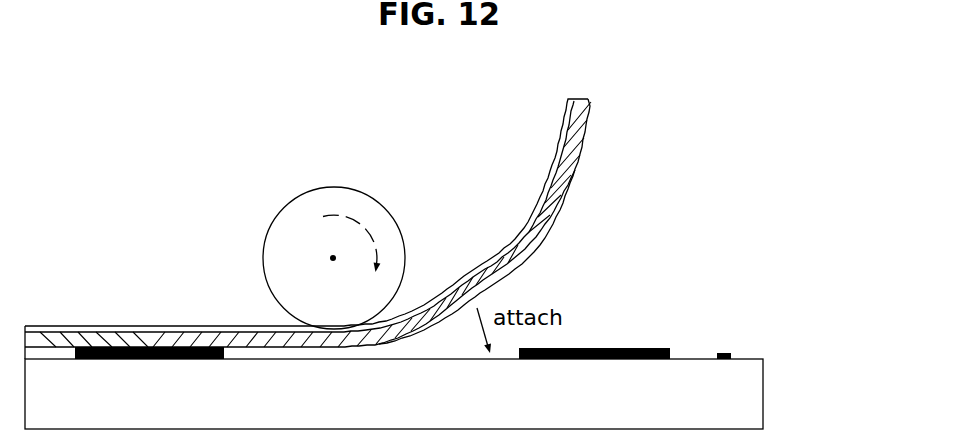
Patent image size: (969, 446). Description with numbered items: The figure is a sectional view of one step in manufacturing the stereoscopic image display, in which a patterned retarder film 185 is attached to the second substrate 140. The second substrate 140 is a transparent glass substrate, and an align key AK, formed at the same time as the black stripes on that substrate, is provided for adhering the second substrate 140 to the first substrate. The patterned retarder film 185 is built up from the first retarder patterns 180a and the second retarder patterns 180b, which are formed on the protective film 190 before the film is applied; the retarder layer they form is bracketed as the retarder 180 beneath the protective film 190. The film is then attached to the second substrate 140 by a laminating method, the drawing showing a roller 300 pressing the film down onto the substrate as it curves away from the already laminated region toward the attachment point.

The second substrate 140 is at (755, 400).
The align key AK is at (729, 343).
The patterned retarder film 185 is at (398, 223).
The protective film 190 is at (571, 121).
The polarizing film 180 is at (369, 223).
The first retarder patterns 180a is at (574, 172).
The second retarder patterns 180b is at (658, 167).
The roller 300 is at (382, 180).